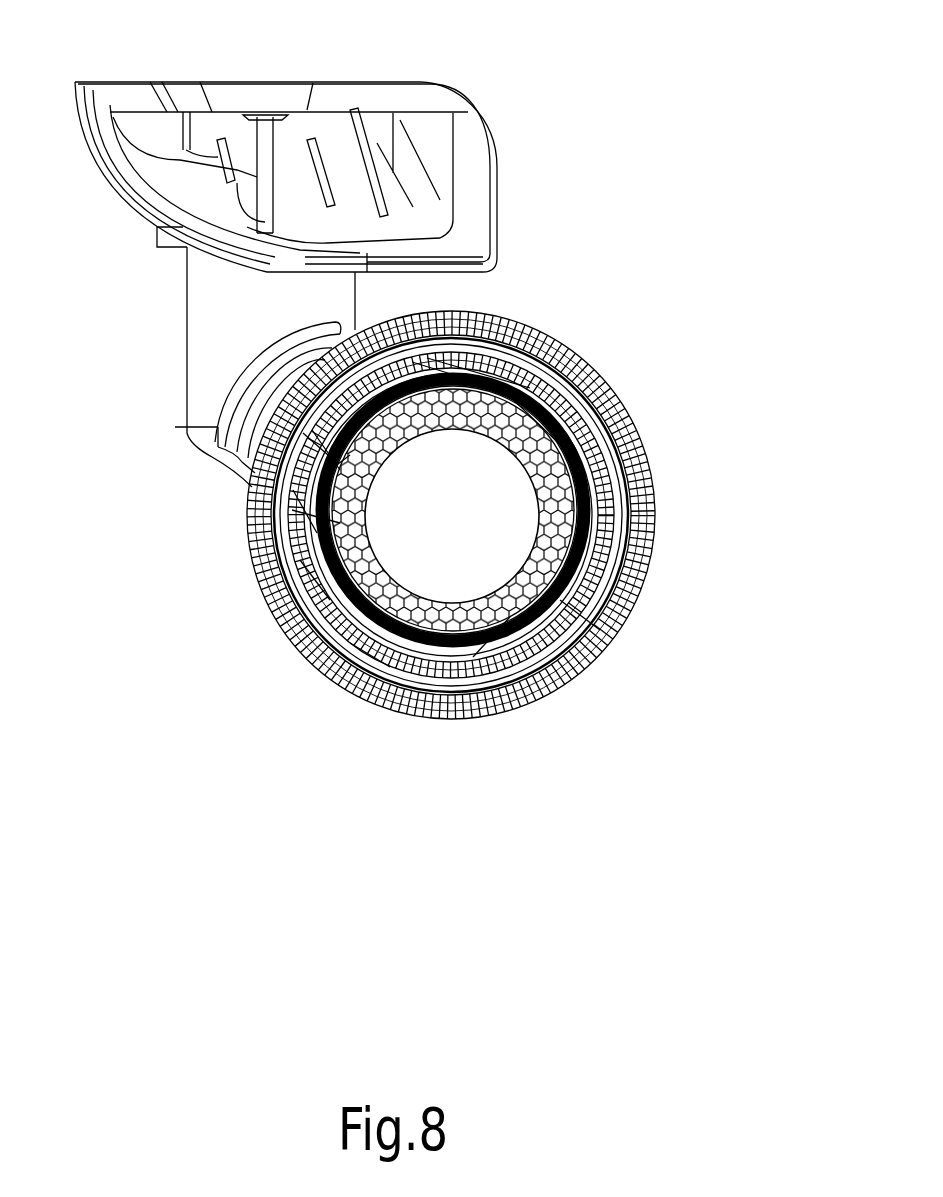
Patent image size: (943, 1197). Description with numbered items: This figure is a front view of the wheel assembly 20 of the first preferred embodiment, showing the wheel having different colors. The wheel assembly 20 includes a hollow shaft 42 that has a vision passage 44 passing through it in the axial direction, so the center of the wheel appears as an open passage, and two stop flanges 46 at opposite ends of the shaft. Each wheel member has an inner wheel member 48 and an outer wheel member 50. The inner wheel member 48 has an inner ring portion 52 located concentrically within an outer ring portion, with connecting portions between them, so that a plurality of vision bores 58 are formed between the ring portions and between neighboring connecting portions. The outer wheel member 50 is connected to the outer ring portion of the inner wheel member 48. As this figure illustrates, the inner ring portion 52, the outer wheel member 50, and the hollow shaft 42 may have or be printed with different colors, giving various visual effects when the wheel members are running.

The wheel assembly 20 is at (530, 111).
The hollow shaft 42 is at (255, 429).
The vision passage 44 is at (510, 548).
The stop flanges 46 is at (267, 537).
The inner wheel member 48 is at (393, 663).
The outer wheel member 50 is at (648, 520).
The inner ring portion 52 is at (293, 623).
The vision bores 58 is at (590, 460).